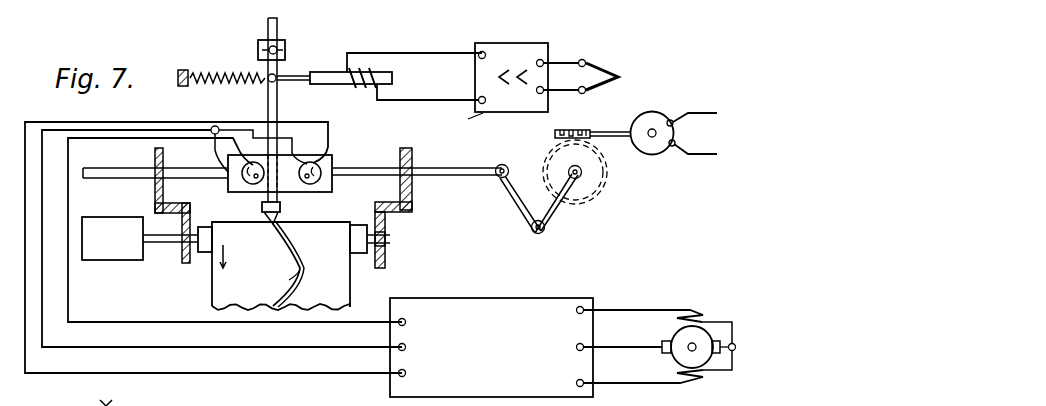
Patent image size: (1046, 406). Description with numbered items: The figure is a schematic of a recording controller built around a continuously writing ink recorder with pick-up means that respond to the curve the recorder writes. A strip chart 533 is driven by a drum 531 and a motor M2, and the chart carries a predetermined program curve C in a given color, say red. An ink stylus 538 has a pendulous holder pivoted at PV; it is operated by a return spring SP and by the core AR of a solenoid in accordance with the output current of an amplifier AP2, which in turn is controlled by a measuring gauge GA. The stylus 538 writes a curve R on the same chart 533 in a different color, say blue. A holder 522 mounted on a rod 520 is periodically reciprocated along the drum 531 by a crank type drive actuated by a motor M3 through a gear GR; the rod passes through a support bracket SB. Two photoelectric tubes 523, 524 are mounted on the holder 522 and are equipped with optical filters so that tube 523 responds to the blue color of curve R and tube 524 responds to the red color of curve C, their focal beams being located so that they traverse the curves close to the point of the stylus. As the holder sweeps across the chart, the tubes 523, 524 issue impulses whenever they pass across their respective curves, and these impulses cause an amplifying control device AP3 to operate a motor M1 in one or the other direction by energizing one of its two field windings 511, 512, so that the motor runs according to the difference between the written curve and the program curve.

The pivot PV is at (285, 47).
The return spring SP is at (236, 74).
The solenoid core AR is at (393, 78).
The amplifier AP2 is at (497, 47).
The measuring gauge GA is at (619, 76).
The gear GR is at (555, 134).
The motor M3 is at (647, 152).
The rod 520 is at (422, 169).
The holder 522 is at (333, 155).
The photoelectric tube 523 is at (250, 193).
The photoelectric tube 524 is at (305, 193).
The support bracket SB is at (412, 208).
The ink stylus 538 is at (268, 223).
The program curve C is at (283, 278).
The recorded curve R is at (296, 280).
The strip chart 533 is at (345, 289).
The drum 531 is at (210, 252).
The motor M2 is at (97, 260).
The amplifying control device AP3 is at (470, 303).
The field winding 511 is at (690, 311).
The motor M1 is at (673, 341).
The field winding 512 is at (690, 382).